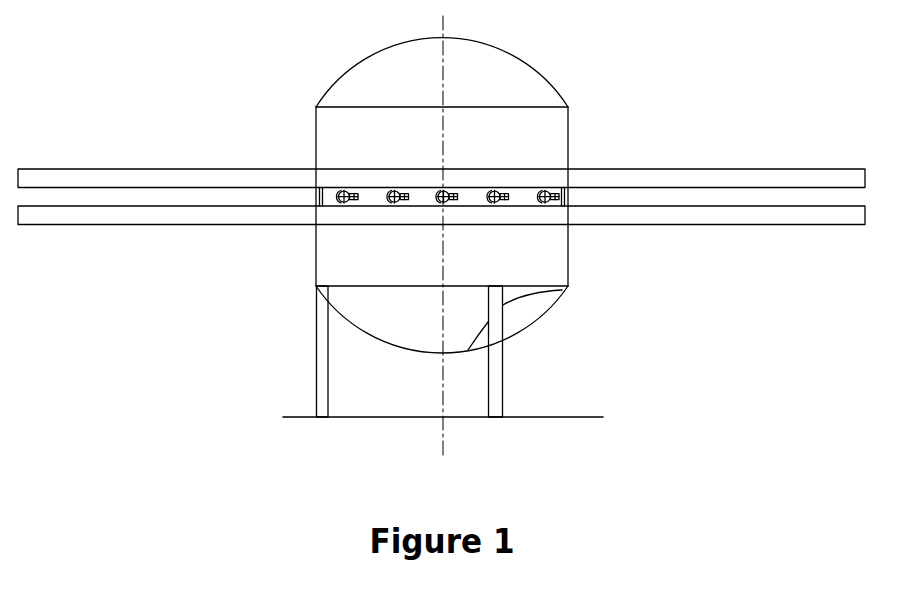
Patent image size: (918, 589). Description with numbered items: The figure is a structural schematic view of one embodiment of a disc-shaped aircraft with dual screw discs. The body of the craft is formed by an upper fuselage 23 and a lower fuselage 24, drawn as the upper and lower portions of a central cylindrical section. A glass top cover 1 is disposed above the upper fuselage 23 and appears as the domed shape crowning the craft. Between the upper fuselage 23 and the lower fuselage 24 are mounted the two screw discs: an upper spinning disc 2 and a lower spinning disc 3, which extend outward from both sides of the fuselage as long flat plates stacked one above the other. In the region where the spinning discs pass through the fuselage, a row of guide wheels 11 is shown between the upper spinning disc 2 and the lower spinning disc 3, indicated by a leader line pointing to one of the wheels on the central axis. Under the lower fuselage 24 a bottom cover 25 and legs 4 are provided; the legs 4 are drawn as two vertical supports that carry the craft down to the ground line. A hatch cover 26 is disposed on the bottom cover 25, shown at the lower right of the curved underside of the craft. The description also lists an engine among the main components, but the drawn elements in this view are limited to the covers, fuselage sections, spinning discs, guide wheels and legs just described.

The glass top cover 1 is at (488, 57).
The guide wheel 11 is at (468, 129).
The upper spinning disc 2 is at (207, 178).
The lower spinning disc 3 is at (202, 215).
The upper fuselage 23 is at (531, 147).
The lower fuselage 24 is at (531, 242).
The bottom cover 25 is at (367, 300).
The hatch cover 26 is at (531, 312).
The legs 4 is at (322, 360).